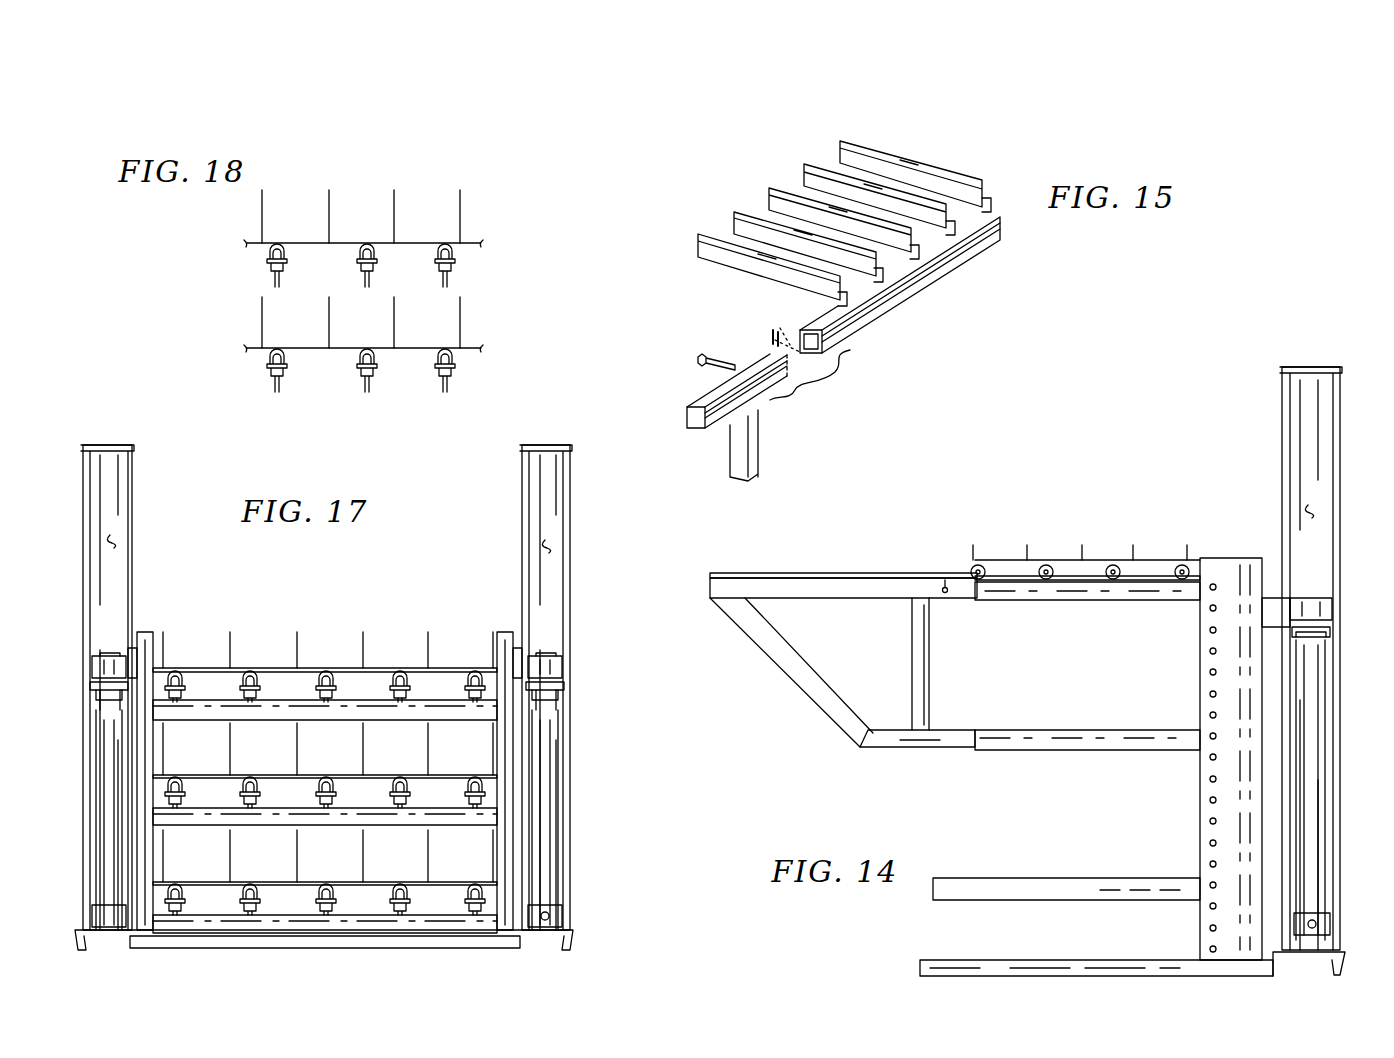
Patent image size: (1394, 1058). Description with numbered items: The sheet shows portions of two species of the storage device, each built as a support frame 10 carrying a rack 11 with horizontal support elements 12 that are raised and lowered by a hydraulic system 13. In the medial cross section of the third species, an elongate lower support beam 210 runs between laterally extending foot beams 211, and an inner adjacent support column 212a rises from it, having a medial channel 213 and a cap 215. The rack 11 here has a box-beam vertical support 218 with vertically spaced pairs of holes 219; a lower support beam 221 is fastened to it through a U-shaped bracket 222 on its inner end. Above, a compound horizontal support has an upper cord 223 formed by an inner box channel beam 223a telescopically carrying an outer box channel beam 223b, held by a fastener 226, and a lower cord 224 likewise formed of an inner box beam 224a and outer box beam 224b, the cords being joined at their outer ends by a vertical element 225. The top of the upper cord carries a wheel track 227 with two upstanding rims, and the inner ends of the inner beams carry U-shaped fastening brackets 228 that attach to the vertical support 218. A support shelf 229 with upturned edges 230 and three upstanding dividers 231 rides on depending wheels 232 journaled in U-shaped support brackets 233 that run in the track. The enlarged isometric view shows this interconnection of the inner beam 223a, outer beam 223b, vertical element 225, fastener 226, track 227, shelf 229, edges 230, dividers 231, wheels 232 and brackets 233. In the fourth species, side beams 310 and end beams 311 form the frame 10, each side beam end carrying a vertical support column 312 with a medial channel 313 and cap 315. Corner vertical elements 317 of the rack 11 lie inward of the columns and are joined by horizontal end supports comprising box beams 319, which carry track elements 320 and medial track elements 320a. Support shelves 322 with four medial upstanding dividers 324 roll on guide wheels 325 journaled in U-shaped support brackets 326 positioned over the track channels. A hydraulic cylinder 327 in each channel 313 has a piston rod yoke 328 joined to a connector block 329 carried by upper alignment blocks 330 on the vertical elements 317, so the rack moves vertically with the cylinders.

In FIG. 17, the support frame 10 is at (518, 498).
In FIG. 14, the support frame 10 is at (1175, 978).
In FIG. 18, the rack 11 is at (470, 236).
In FIG. 17, the rack 11 is at (152, 625).
In FIG. 14, the rack 11 is at (1195, 838).
In FIG. 17, the horizontal support elements 12 is at (445, 940).
In FIG. 14, the horizontal support elements 12 is at (1022, 760).
In FIG. 17, the hydraulic system 13 is at (100, 882).
In FIG. 14, the hydraulic system 13 is at (1330, 778).
In FIG. 14, the lower support beam 210 is at (1334, 962).
In FIG. 14, the foot beam 211 is at (1088, 960).
In FIG. 14, the inner adjacent support column 212a is at (1282, 410).
In FIG. 14, the medial channel 213 is at (1310, 508).
In FIG. 14, the cap 215 is at (1312, 366).
In FIG. 14, the vertical support 218 is at (1200, 795).
In FIG. 14, the holes 219 is at (1208, 714).
In FIG. 14, the lower support beam 221 is at (1065, 876).
In FIG. 14, the U-shaped bracket 222 is at (1198, 912).
In FIG. 14, the upper cord 223 is at (955, 605).
In FIG. 15, the inner box channel beam 223a is at (872, 312).
In FIG. 14, the inner box channel beam 223a is at (1190, 602).
In FIG. 15, the outer box channel beam 223b is at (737, 402).
In FIG. 14, the outer box channel beam 223b is at (895, 598).
In FIG. 14, the lower cord 224 is at (965, 730).
In FIG. 14, the inner box beam 224a is at (1165, 748).
In FIG. 14, the outer box beam 224b is at (912, 750).
In FIG. 15, the vertical element 225 is at (758, 462).
In FIG. 14, the vertical element 225 is at (915, 655).
In FIG. 15, the fastener 226 is at (698, 358).
In FIG. 14, the fastener 226 is at (942, 578).
In FIG. 15, the wheel track 227 is at (700, 394).
In FIG. 14, the wheel track 227 is at (830, 575).
In FIG. 14, the U-shaped fastening bracket 228 is at (1200, 632).
In FIG. 15, the support shelf 229 is at (870, 175).
In FIG. 14, the support shelf 229 is at (978, 558).
In FIG. 15, the upturned edge 230 is at (780, 282).
In FIG. 14, the upturned edge 230 is at (972, 550).
In FIG. 15, the divider 231 is at (738, 218).
In FIG. 14, the divider 231 is at (1082, 545).
In FIG. 15, the wheel 232 is at (915, 282).
In FIG. 14, the wheel 232 is at (1095, 582).
In FIG. 15, the U-shaped support bracket 233 is at (985, 235).
In FIG. 14, the U-shaped support bracket 233 is at (1180, 548).
In FIG. 17, the side beam 310 is at (80, 950).
In FIG. 17, the end beam 311 is at (215, 950).
In FIG. 17, the vertical support column 312 is at (135, 492).
In FIG. 17, the medial channel 313 is at (112, 538).
In FIG. 17, the cap 315 is at (110, 450).
In FIG. 17, the vertical element 317 is at (150, 662).
In FIG. 17, the box beam (horizontal end support) 319 is at (342, 712).
In FIG. 18, the track element 320 is at (364, 388).
In FIG. 17, the track element 320 is at (178, 700).
In FIG. 18, the medial track element 320a is at (445, 394).
In FIG. 17, the medial track element 320a is at (360, 828).
In FIG. 18, the support shelf 322 is at (291, 238).
In FIG. 17, the support shelf 322 is at (265, 885).
In FIG. 18, the medial upstanding divider 324 is at (330, 208).
In FIG. 17, the medial upstanding divider 324 is at (360, 625).
In FIG. 18, the guide wheel 325 is at (360, 358).
In FIG. 17, the guide wheel 325 is at (395, 712).
In FIG. 18, the U-shaped support bracket 326 is at (443, 252).
In FIG. 17, the U-shaped support bracket 326 is at (318, 680).
In FIG. 17, the hydraulic cylinder 327 is at (103, 748).
In FIG. 17, the piston rod yoke 328 is at (94, 686).
In FIG. 17, the connector block 329 is at (95, 668).
In FIG. 17, the upper alignment block 330 is at (128, 655).